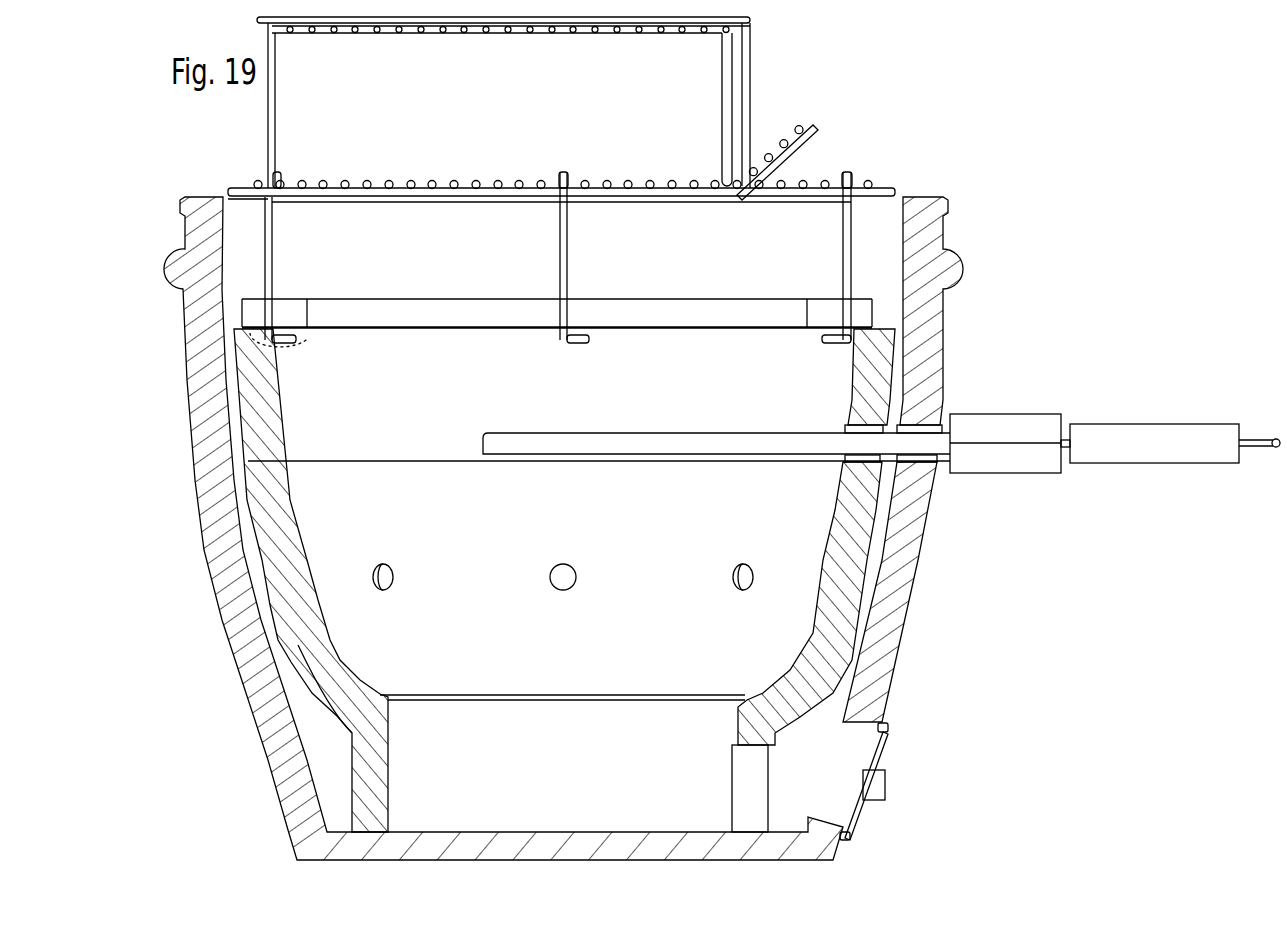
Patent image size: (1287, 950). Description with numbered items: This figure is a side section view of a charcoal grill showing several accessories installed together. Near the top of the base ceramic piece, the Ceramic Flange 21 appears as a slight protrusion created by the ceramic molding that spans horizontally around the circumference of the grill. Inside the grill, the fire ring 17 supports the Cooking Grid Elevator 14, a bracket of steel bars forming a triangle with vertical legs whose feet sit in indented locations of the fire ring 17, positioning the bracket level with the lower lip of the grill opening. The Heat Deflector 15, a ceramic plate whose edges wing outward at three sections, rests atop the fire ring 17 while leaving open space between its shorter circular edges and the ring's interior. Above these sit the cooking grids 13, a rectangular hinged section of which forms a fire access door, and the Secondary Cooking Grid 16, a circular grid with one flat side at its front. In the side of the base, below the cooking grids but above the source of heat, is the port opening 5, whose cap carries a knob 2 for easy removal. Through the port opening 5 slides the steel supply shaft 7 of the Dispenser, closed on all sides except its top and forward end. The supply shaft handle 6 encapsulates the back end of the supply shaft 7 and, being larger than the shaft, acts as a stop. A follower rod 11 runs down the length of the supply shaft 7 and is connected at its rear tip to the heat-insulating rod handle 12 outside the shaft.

The knob 2 is at (181, 205).
The port opening 5 is at (912, 460).
The supply shaft handle 6 is at (1005, 458).
The supply shaft 7 is at (716, 445).
The follower rod 11 is at (1070, 447).
The rod handle 12 is at (1220, 442).
The cooking grids 13 is at (802, 173).
The Cooking Grid Elevator 14 is at (265, 274).
The Heat Deflector 15 is at (861, 313).
The Secondary Cooking Grid 16 is at (273, 117).
The fire ring 17 is at (258, 412).
The Ceramic Flange 21 is at (943, 213).